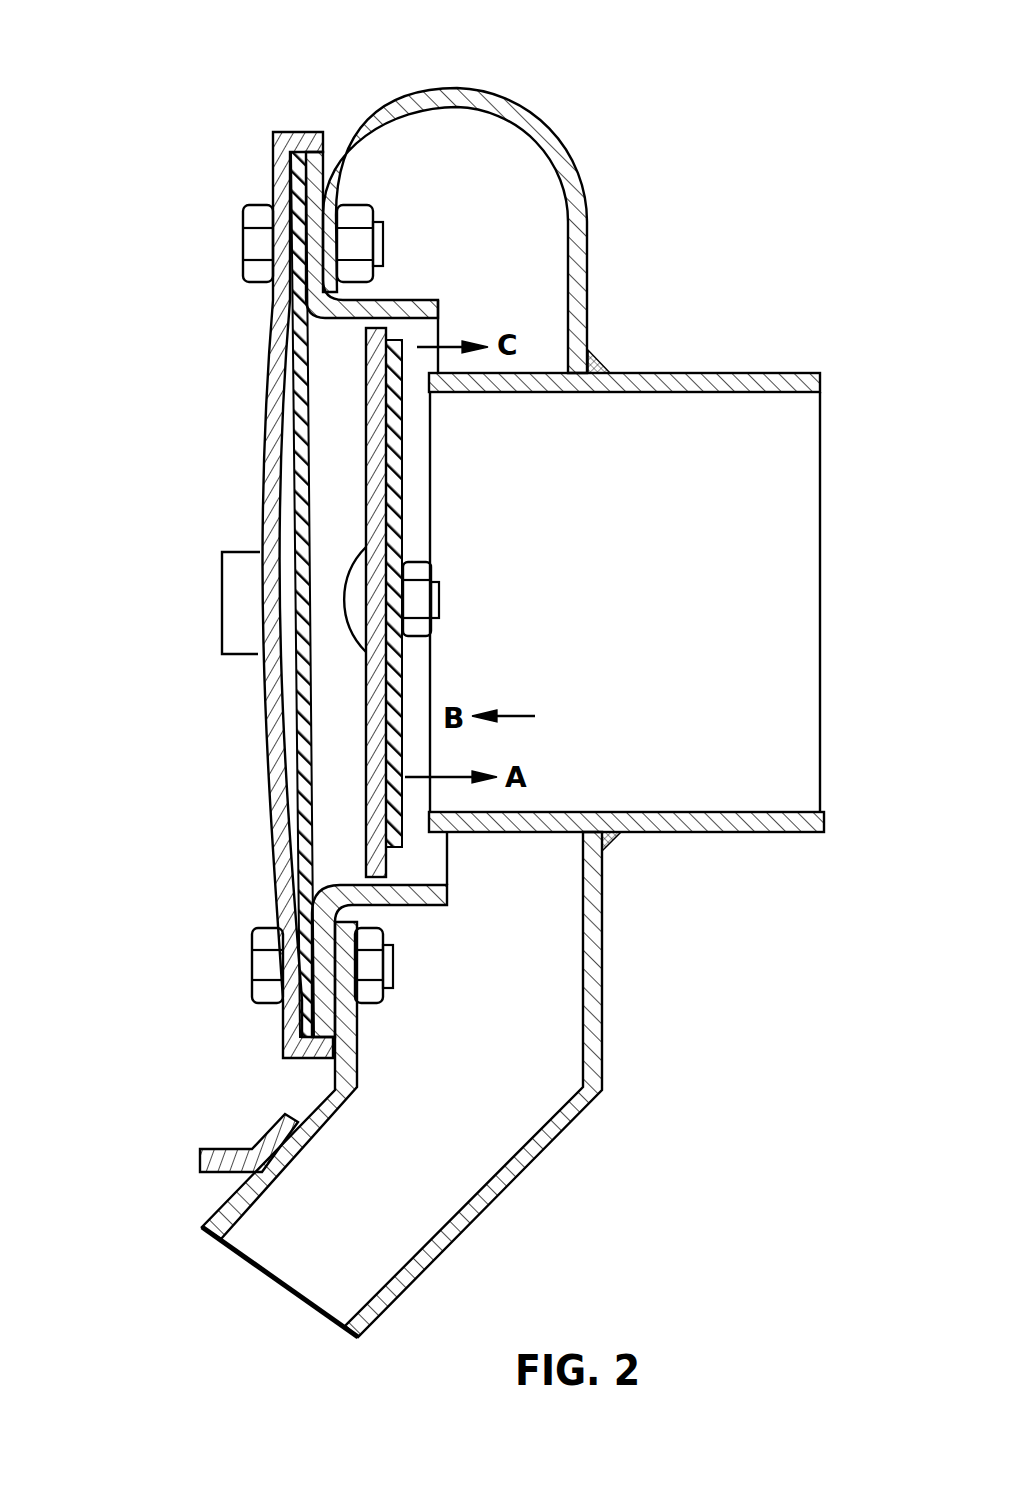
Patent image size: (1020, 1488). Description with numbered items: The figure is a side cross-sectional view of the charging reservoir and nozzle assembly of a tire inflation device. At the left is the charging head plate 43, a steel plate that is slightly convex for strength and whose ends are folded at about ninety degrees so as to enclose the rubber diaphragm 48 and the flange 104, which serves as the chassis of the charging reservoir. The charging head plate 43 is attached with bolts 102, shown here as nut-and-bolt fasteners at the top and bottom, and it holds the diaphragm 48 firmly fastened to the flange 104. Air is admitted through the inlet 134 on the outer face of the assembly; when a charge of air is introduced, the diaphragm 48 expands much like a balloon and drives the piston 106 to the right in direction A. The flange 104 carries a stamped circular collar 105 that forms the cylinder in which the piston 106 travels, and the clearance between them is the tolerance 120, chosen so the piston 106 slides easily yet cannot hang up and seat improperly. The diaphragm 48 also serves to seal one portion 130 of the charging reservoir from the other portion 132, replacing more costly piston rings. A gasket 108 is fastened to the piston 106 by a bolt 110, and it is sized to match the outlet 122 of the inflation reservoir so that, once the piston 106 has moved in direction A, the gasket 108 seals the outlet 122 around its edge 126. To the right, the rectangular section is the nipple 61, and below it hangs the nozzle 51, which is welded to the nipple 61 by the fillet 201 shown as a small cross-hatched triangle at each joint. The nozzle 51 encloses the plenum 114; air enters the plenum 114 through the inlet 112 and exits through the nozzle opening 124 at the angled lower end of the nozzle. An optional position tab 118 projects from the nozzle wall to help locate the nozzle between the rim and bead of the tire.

The flange 104 is at (455, 192).
The bolts 102 is at (236, 604).
The circular collar 105 is at (396, 235).
The inlet 112 is at (499, 584).
The fillet 201 is at (668, 584).
The nipple 61 is at (632, 551).
The rubber diaphragm 48 is at (226, 595).
The charging head plate 43 is at (218, 594).
The outlet 122 is at (485, 516).
The portion 132 is at (474, 593).
The bolt 110 is at (482, 589).
The gasket 108 is at (480, 716).
The inlet 134 is at (160, 618).
The portion 130 is at (250, 602).
The edge 126 is at (627, 795).
The tolerance 120 is at (237, 952).
The piston 106 is at (422, 938).
The nozzle 51 is at (539, 1084).
The position tab 118 is at (212, 1142).
The plenum 114 is at (357, 1080).
The nozzle opening 124 is at (280, 1312).